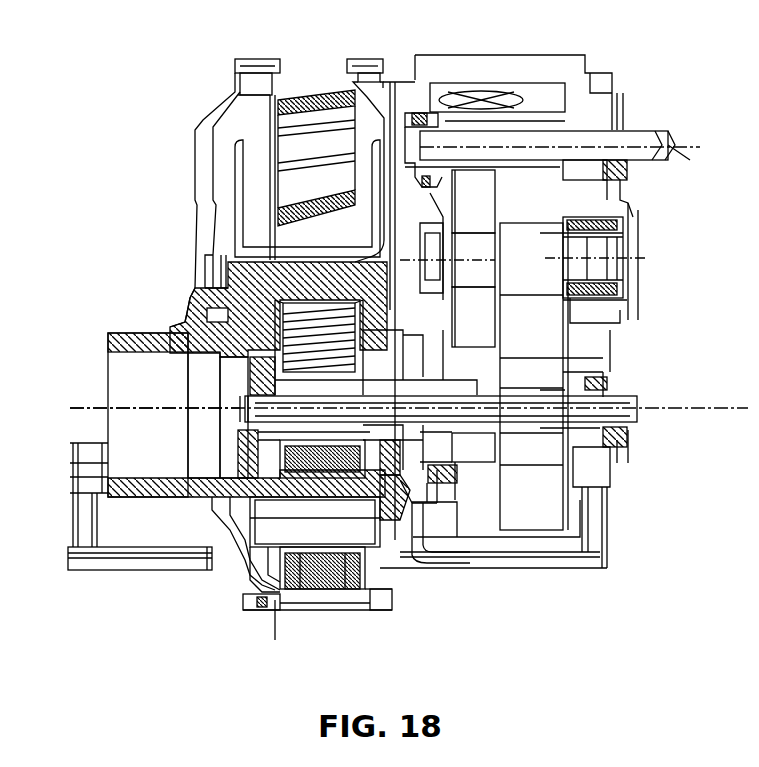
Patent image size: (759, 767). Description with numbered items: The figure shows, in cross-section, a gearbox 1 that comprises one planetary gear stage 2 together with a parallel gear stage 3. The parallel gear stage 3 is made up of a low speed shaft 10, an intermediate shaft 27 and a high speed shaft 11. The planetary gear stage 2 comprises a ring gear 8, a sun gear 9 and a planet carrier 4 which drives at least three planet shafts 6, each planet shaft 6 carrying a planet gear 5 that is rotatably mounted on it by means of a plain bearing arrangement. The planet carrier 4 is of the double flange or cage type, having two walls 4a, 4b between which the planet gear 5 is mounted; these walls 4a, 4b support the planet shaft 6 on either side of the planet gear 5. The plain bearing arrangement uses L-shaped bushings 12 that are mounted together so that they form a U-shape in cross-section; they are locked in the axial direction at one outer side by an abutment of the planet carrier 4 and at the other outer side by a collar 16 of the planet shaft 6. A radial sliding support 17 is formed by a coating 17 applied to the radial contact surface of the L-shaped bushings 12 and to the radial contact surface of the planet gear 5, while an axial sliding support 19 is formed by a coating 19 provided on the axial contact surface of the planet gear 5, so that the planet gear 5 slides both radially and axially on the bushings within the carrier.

The gearbox 1 is at (112, 45).
The planetary gear stage 2 is at (152, 212).
The parallel gear stage 3 is at (523, 580).
The planet carrier 4 is at (120, 328).
The wall of planet carrier 4a is at (238, 568).
The wall of planet carrier 4b is at (370, 490).
The planet gear 5 is at (313, 590).
The planet shaft 6 is at (98, 412).
The ring gear 8 is at (356, 602).
The sun gear 9 is at (270, 412).
The low speed shaft 10 is at (638, 397).
The high speed shaft 11 is at (645, 138).
The L-shaped bushing 12 is at (274, 560).
The collar of planet shaft 16 is at (268, 508).
The radial sliding support (coating) 17 is at (342, 590).
The axial sliding support (coating) 19 is at (240, 582).
The intermediate shaft 27 is at (612, 261).